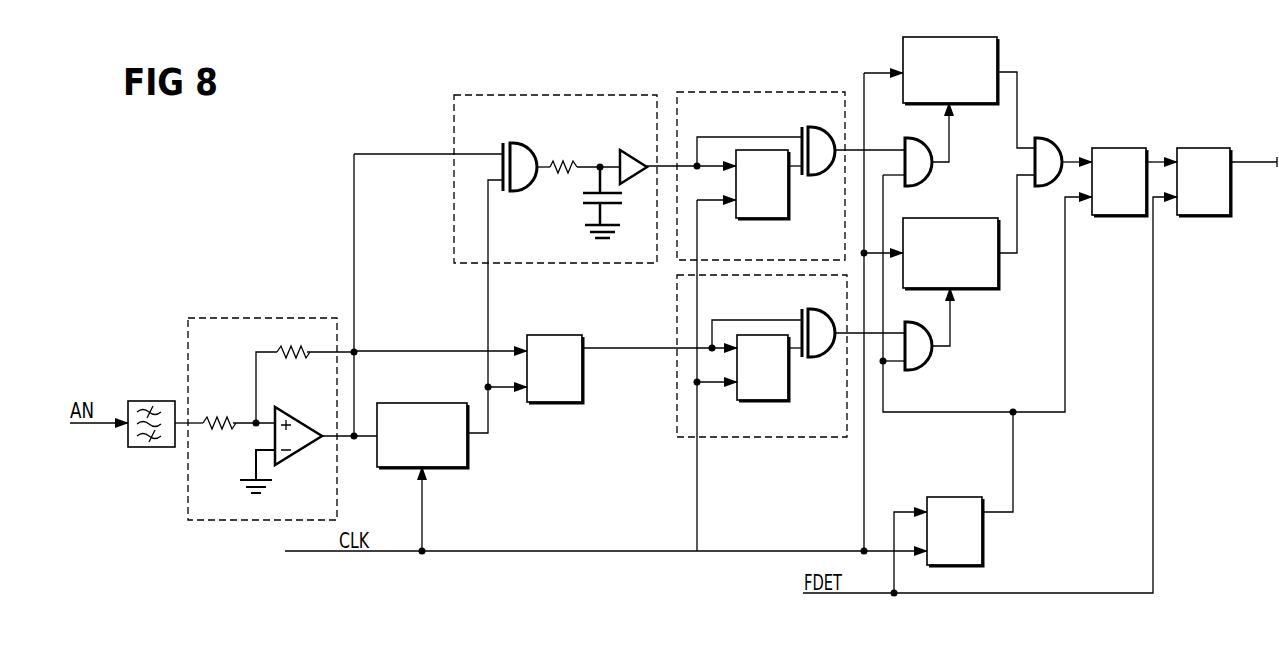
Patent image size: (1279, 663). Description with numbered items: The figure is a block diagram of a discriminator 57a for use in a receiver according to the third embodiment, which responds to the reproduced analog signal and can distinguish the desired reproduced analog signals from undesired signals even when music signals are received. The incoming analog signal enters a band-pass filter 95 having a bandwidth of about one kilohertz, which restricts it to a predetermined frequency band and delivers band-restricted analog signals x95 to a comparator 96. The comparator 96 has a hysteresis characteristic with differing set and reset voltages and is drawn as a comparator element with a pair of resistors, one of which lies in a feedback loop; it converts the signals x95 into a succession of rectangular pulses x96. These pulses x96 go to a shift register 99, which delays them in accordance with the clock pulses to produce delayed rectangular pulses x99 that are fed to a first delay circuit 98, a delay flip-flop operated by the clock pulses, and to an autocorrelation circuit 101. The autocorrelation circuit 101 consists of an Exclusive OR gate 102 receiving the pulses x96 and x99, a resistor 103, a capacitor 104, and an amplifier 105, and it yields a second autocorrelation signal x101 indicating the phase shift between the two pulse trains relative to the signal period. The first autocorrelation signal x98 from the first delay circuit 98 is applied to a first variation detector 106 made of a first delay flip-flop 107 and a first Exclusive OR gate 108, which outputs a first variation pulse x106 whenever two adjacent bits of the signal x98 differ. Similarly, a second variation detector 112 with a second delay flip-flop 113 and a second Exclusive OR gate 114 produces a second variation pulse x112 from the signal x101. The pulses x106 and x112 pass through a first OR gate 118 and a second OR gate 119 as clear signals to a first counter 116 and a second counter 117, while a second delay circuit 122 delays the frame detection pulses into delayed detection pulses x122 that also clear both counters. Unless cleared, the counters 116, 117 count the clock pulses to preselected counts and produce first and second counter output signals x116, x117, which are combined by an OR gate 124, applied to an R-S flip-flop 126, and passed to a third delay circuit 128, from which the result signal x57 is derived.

The band-pass filter 95 is at (150, 401).
The band-restricted analog signals x95 is at (180, 445).
The comparator 96 is at (290, 318).
The rectangular pulses x96 is at (345, 440).
The first delay circuit 98 is at (553, 335).
The first autocorrelation signal x98 is at (659, 339).
The shift register 99 is at (433, 403).
The delayed rectangular pulses x99 is at (488, 417).
The autocorrelation circuit 101 is at (492, 95).
The second autocorrelation signal x101 is at (660, 166).
The Exclusive OR gate 102 is at (522, 142).
The resistor 103 is at (563, 160).
The capacitor 104 is at (590, 214).
The amplifier 105 is at (640, 150).
The first variation detector 106 is at (676, 418).
The first variation pulse x106 is at (848, 336).
The first delay flip-flop 107 is at (788, 386).
The first Exclusive OR gate 108 is at (813, 310).
The second variation detector 112 is at (713, 92).
The second variation pulse x112 is at (853, 150).
The second delay flip-flop 113 is at (788, 205).
The second Exclusive OR gate 114 is at (821, 126).
The first counter 116 is at (965, 218).
The first counter output signal x116 is at (1017, 225).
The second counter 117 is at (955, 37).
The second counter output signal x117 is at (1017, 105).
The first OR gate 118 is at (932, 360).
The second OR gate 119 is at (913, 137).
The second delay circuit 122 is at (950, 497).
The delayed detection pulses x122 is at (1013, 445).
The OR gate 124 is at (1046, 138).
The R-S flip-flop 126 is at (1112, 148).
The third delay circuit 128 is at (1200, 148).
The result signal x57 is at (1253, 152).
The discriminator 57a is at (527, 583).